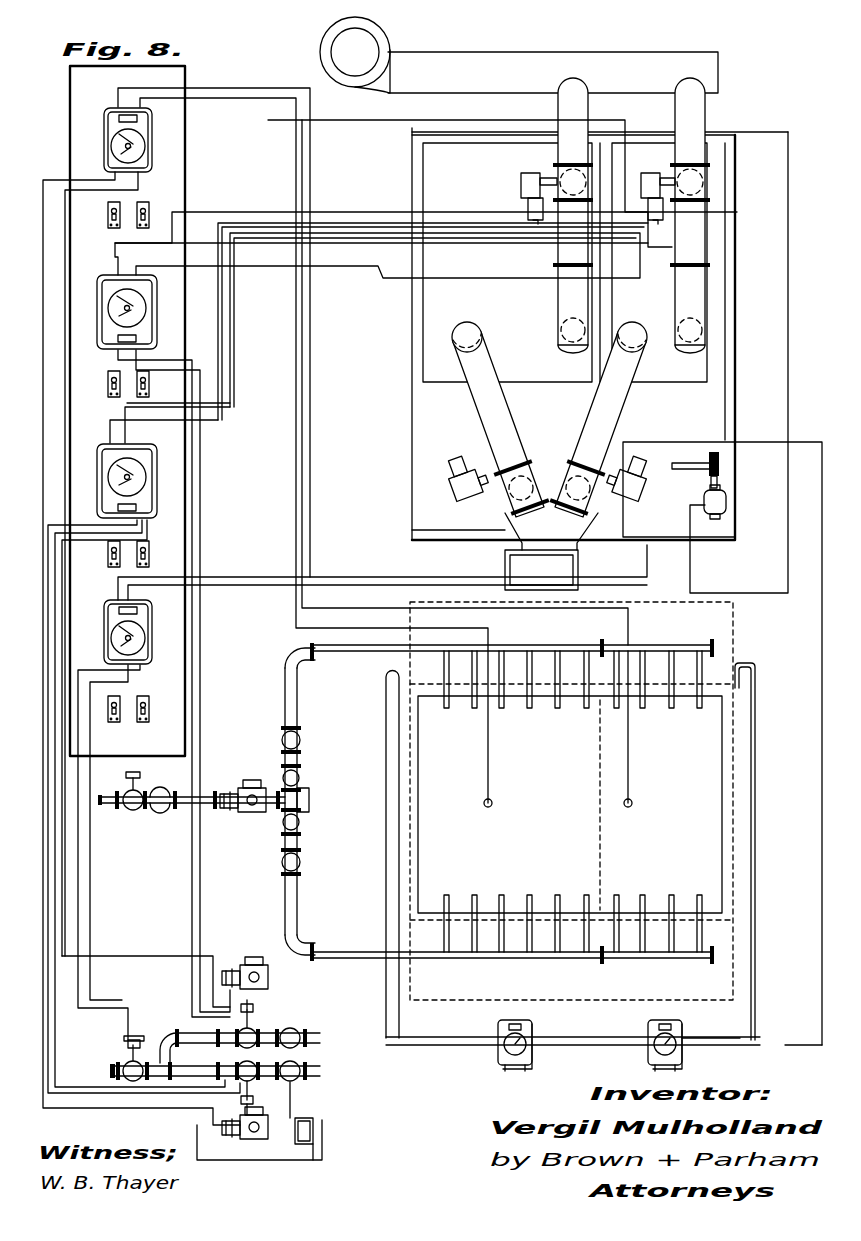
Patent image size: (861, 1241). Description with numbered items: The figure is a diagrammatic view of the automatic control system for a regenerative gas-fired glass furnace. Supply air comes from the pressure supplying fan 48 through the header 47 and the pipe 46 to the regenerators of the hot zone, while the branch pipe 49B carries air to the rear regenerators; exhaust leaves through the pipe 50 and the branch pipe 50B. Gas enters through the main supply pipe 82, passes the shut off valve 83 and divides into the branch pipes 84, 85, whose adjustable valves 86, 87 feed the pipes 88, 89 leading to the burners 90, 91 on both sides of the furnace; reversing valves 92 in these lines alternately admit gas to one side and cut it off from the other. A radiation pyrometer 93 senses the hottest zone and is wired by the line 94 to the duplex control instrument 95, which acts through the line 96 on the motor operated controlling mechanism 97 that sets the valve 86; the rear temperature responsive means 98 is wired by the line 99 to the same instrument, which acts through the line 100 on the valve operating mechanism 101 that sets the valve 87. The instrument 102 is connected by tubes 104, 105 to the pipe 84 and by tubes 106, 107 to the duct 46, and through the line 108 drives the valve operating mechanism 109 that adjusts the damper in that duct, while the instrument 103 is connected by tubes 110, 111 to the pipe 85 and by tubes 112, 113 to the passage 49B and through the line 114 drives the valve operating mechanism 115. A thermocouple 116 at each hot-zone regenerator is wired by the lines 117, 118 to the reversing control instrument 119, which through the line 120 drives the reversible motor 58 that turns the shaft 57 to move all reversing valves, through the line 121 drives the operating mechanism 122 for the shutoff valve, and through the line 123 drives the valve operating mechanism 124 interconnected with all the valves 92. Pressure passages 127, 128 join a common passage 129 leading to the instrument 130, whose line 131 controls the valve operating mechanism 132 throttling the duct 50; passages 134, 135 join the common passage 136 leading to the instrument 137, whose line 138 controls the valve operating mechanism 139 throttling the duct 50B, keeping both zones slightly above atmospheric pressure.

The pipe 46 is at (700, 215).
The header 47 is at (497, 58).
The pressure supplying fan 48 is at (363, 43).
The branch pipe 49B is at (556, 150).
The pipe 50 is at (620, 378).
The branch pipe 50B is at (490, 380).
The shaft 57 is at (672, 470).
The reversible motor 58 is at (726, 502).
The main supply pipe 82 is at (108, 806).
The shut off valve 83 is at (136, 812).
The branch pipe 84 is at (192, 1064).
The branch pipe 85 is at (208, 797).
The adjustable valve 86 is at (252, 1062).
The adjustable valve 87 is at (243, 812).
The pipes 88 is at (665, 645).
The pipes 89 is at (316, 656).
The burners 90 is at (617, 710).
The burners 91 is at (447, 710).
The reversing valves 92 is at (300, 778).
The radiation pyrometer 93 is at (632, 803).
The conductors 94 is at (310, 150).
The control instrument 95 is at (150, 135).
The conductors 96 is at (45, 375).
The motor operated controlling mechanism 97 is at (250, 1140).
The temperature responsive means 98 is at (492, 803).
The conductors 99 is at (490, 634).
The conductors 100 is at (68, 237).
The valve operating mechanism 101 is at (238, 962).
The instrument 102 is at (155, 478).
The instrument 103 is at (155, 305).
The tube 104 is at (55, 855).
The tube 105 is at (45, 870).
The tube 106 is at (222, 300).
The tube 107 is at (248, 310).
The conductors 108 is at (627, 156).
The valve operating mechanism 109 is at (700, 182).
The tube 110 is at (205, 615).
The tube 111 is at (205, 633).
The tube 112 is at (325, 250).
The tube 113 is at (330, 275).
The conductors 114 is at (343, 207).
The valve operating mechanism 115 is at (520, 195).
The thermocouple 116 is at (648, 132).
The conductors 117 is at (788, 298).
The conductors 118 is at (655, 568).
The reversing control instrument 119 is at (104, 605).
The conductors 120 is at (692, 565).
The conductors 121 is at (92, 760).
The operating mechanism 122 is at (118, 1036).
The conductors 123 is at (80, 727).
The valve operating mechanism 124 is at (310, 1115).
The passage 127 is at (757, 690).
The passage 128 is at (712, 962).
The common passage 129 is at (700, 1036).
The instrument 130 is at (648, 1028).
The conductors 131 is at (820, 948).
The valve operating mechanism 132 is at (646, 455).
The passage 134 is at (385, 712).
The passage 135 is at (412, 1040).
The common passage 136 is at (440, 1036).
The instrument 137 is at (533, 1033).
The conductors 138 is at (390, 1046).
The valve operating mechanism 139 is at (455, 480).